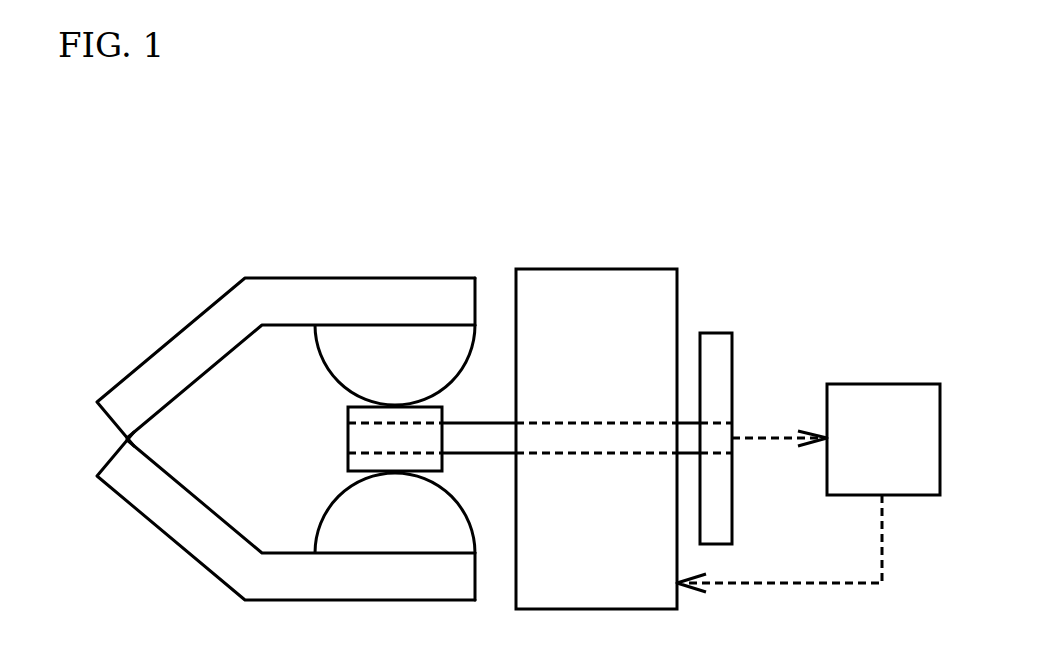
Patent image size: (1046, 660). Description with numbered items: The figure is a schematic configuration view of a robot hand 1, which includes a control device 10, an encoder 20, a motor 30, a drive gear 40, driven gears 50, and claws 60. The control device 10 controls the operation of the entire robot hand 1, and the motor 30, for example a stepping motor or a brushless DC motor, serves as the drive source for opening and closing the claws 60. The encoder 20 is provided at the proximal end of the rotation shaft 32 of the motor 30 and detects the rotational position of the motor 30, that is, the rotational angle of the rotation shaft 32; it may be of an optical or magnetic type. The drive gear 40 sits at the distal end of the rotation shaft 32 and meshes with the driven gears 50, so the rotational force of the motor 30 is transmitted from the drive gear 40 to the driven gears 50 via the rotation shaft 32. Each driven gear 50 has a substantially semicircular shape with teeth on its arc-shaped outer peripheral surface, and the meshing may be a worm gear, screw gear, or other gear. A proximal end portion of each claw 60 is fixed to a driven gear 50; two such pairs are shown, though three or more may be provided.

The robot hand 1 is at (809, 192).
The control device 10 is at (908, 388).
The encoder 20 is at (718, 340).
The motor 30 is at (598, 295).
The rotation shaft 32 is at (484, 422).
The drive gear 40 is at (355, 446).
The driven gear 50 is at (388, 345).
The claw 60 is at (221, 327).